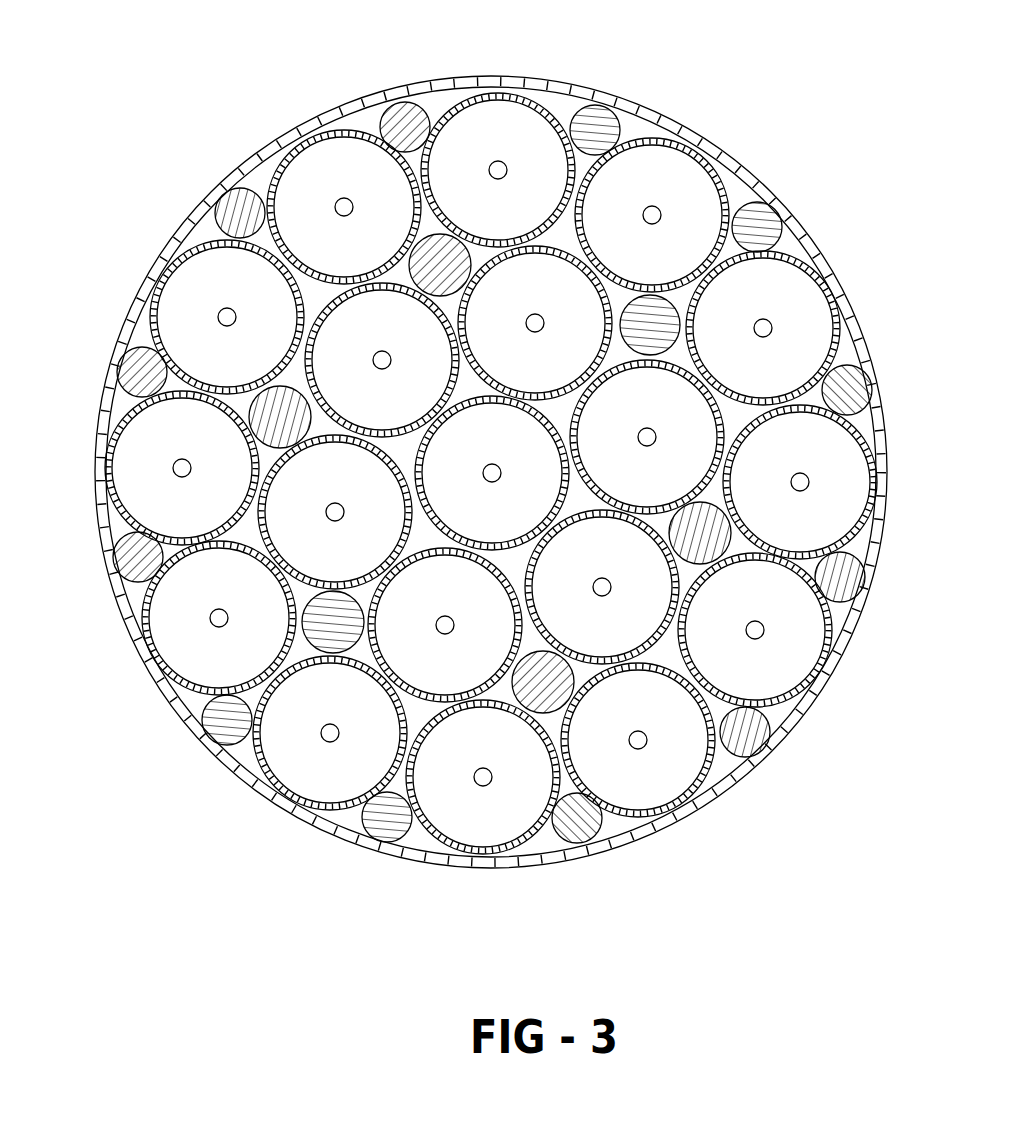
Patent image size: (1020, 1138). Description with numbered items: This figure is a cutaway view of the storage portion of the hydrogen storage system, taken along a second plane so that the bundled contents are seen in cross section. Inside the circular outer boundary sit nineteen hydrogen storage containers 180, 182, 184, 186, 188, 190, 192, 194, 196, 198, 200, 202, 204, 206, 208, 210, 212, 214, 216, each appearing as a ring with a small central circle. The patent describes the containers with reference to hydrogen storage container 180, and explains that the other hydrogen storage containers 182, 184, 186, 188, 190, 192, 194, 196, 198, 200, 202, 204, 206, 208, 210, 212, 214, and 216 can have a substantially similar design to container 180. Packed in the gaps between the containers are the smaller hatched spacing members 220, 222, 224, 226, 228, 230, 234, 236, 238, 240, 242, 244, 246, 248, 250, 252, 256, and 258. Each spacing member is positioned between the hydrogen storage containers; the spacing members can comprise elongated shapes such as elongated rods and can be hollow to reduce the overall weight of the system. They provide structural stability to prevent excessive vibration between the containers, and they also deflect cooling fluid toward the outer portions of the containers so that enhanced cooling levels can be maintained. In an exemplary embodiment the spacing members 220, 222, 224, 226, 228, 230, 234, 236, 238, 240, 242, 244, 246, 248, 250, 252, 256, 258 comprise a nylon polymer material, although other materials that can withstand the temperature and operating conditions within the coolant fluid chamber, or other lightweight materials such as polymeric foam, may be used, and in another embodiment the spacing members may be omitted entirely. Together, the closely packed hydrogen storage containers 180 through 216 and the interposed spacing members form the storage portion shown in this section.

The hydrogen storage container 180 is at (840, 518).
The hydrogen storage container 182 is at (810, 315).
The hydrogen storage container 184 is at (690, 195).
The hydrogen storage container 186 is at (518, 135).
The hydrogen storage container 188 is at (333, 170).
The hydrogen storage container 190 is at (198, 290).
The hydrogen storage container 192 is at (135, 455).
The hydrogen storage container 194 is at (177, 652).
The hydrogen storage container 196 is at (297, 777).
The hydrogen storage container 198 is at (782, 690).
The hydrogen storage container 200 is at (665, 788).
The hydrogen storage container 202 is at (475, 828).
The hydrogen storage container 204 is at (413, 653).
The hydrogen storage container 206 is at (623, 637).
The hydrogen storage container 208 is at (708, 452).
The hydrogen storage container 210 is at (490, 512).
The hydrogen storage container 212 is at (298, 478).
The hydrogen storage container 214 is at (355, 320).
The hydrogen storage container 216 is at (573, 288).
The spacing member 220 is at (213, 725).
The spacing member 222 is at (378, 828).
The spacing member 224 is at (583, 833).
The spacing member 226 is at (760, 747).
The spacing member 228 is at (840, 607).
The spacing member 230 is at (681, 545).
The spacing member 234 is at (524, 694).
The spacing member 236 is at (314, 634).
The spacing member 238 is at (130, 585).
The spacing member 240 is at (261, 429).
The spacing member 242 is at (138, 360).
The spacing member 244 is at (421, 277).
The spacing member 246 is at (222, 207).
The spacing member 248 is at (631, 337).
The spacing member 250 is at (757, 213).
The spacing member 252 is at (847, 370).
The spacing member 256 is at (600, 112).
The spacing member 258 is at (405, 110).